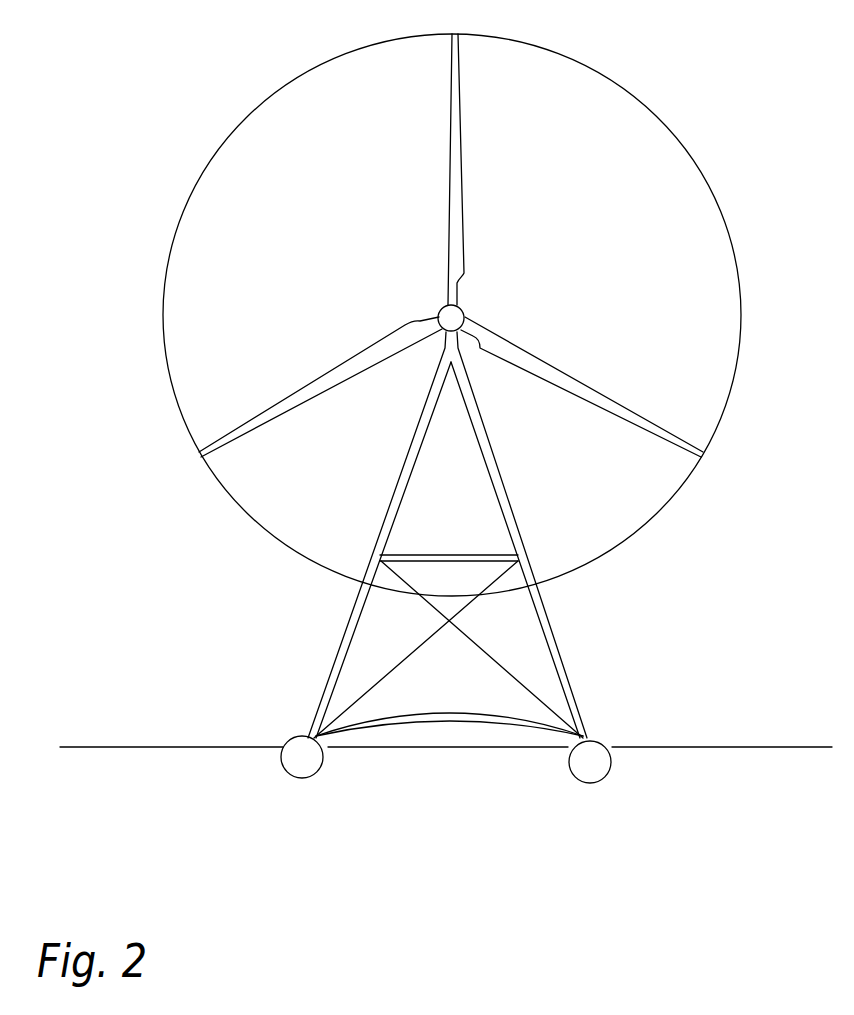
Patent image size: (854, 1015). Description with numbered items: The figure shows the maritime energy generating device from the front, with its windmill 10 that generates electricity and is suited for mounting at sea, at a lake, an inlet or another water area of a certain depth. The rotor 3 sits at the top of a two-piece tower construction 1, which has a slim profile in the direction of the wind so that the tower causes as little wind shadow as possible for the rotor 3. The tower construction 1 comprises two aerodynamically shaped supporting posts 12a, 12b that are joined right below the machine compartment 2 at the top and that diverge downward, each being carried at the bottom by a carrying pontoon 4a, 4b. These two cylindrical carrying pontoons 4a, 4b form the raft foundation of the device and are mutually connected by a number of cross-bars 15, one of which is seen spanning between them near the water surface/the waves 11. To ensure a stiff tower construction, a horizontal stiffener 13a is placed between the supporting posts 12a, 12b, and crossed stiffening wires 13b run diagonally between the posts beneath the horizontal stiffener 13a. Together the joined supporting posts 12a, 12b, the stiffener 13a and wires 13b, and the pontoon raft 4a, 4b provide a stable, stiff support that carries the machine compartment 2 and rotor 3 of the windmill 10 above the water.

The tower construction 1 is at (469, 594).
The machine compartment 2 is at (464, 306).
The rotor 3 is at (380, 333).
The carrying pontoon 4a is at (305, 763).
The carrying pontoon 4b is at (592, 762).
The windmill 10 is at (660, 113).
The surface/the waves 11 is at (750, 748).
The supporting post 12a is at (333, 658).
The supporting post 12b is at (578, 706).
The horizontal stiffener 13a is at (445, 555).
The crossed stiffening wires 13b is at (393, 672).
The cross-bar 15 is at (452, 740).